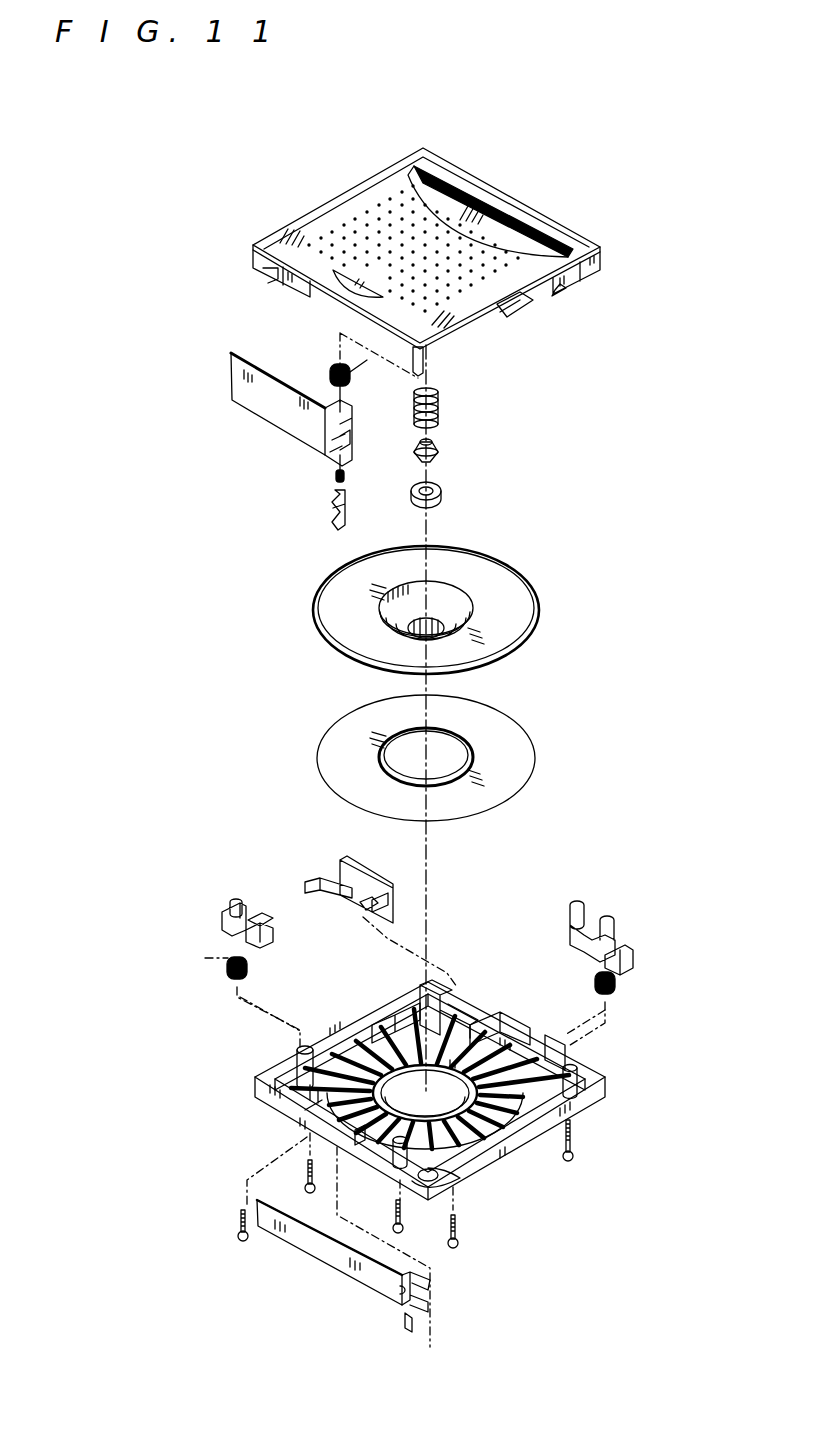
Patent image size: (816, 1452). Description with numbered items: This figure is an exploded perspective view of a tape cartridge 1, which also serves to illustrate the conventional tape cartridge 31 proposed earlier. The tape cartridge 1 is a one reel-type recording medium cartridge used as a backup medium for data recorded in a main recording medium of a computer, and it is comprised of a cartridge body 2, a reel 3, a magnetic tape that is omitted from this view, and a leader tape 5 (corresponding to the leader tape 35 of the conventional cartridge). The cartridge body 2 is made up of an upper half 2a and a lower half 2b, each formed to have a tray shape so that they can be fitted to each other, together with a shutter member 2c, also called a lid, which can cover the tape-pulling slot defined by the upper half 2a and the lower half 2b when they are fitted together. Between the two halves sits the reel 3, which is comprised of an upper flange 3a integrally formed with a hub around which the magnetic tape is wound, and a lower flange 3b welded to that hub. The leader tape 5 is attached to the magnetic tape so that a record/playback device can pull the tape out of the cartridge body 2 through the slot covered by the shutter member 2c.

The tape cartridge 1 is at (400, 146).
The conventional tape cartridge 31 is at (461, 747).
The cartridge body 2 is at (632, 171).
The upper half 2a is at (330, 222).
The lower half 2b is at (262, 1093).
The shutter member 2c is at (292, 407).
The reel 3 is at (552, 547).
The upper flange 3a is at (340, 598).
The lower flange 3b is at (335, 752).
The leader tape 5 is at (345, 1265).
The leader tape 35 is at (343, 1266).